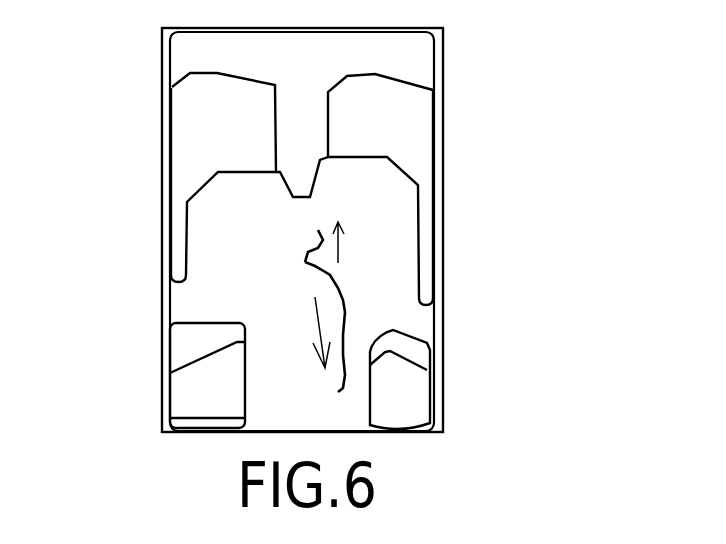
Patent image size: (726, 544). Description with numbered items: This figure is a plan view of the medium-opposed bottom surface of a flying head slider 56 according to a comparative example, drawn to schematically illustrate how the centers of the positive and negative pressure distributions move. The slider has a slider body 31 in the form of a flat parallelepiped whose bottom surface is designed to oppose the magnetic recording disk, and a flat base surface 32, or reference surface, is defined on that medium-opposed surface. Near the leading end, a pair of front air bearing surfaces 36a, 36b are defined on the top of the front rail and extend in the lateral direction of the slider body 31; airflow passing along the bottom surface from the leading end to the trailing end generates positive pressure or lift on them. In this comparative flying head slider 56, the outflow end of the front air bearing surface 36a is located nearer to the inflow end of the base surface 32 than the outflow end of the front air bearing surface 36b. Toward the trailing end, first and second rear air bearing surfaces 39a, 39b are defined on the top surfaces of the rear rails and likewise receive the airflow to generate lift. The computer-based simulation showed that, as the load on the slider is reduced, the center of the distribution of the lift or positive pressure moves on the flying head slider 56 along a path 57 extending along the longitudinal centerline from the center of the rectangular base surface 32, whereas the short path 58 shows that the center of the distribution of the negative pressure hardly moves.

The slider body 31 is at (443, 223).
The base surface 32 is at (443, 328).
The front air bearing surface 36a is at (417, 142).
The front air bearing surface 36b is at (187, 141).
The first rear air bearing surface 39a is at (430, 400).
The second rear air bearing surface 39b is at (183, 392).
The flying head slider 56 is at (503, 91).
The path 57 is at (345, 315).
The path 58 is at (318, 230).